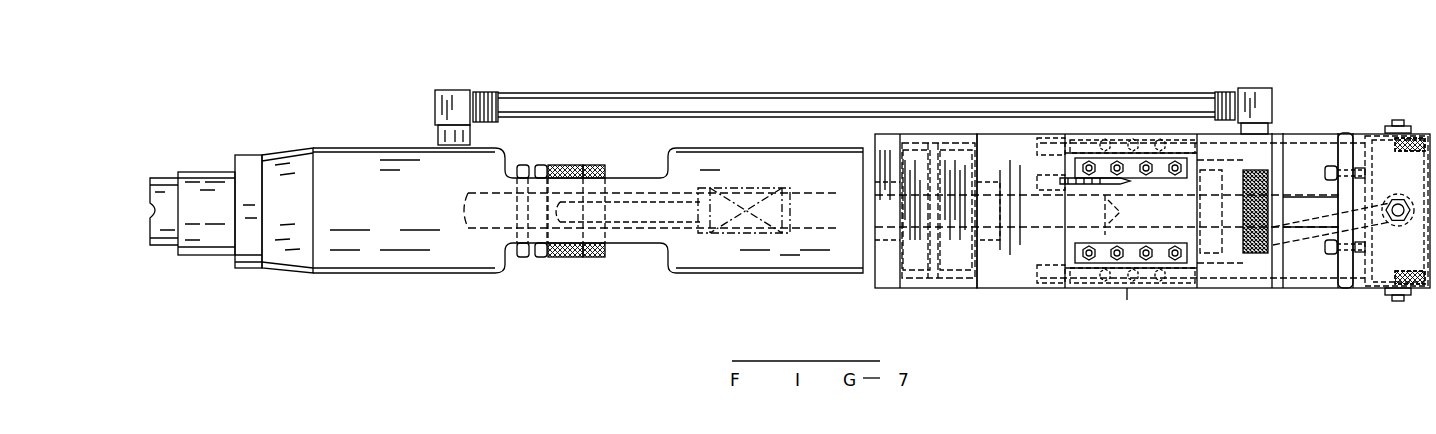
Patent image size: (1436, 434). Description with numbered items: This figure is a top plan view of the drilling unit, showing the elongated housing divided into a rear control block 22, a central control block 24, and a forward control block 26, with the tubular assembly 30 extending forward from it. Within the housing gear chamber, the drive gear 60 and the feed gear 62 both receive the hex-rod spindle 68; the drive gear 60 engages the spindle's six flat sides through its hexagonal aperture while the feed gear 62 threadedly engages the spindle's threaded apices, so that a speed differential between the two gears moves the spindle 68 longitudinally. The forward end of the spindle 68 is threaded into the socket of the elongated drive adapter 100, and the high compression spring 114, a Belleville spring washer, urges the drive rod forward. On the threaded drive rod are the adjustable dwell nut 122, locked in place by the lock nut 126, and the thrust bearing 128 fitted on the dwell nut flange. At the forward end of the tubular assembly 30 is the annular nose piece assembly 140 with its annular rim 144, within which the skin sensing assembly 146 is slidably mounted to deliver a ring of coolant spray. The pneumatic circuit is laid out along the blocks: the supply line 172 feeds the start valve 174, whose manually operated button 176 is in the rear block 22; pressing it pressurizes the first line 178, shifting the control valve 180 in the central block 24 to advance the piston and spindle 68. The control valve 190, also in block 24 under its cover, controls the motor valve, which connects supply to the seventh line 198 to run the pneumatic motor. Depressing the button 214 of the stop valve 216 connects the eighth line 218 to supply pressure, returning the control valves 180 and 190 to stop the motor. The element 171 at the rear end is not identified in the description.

The rear control block 22 is at (1426, 133).
The central control block 24 is at (1225, 290).
The forward control block 26 is at (1003, 290).
The tubular assembly 30 is at (468, 278).
The drive gear 60 is at (917, 147).
The feed gear 62 is at (953, 147).
The hex-rod spindle 68 is at (1012, 192).
The drive adapter 100 is at (805, 190).
The high compression spring 114 is at (757, 205).
The dwell nut 122 is at (562, 164).
The lock nut 126 is at (602, 164).
The thrust bearing 128 is at (535, 164).
The annular nose piece assembly 140 is at (284, 148).
The annular rim 144 is at (177, 175).
The skin sensing assembly 146 is at (210, 172).
The hex adjustment nut 171 is at (1412, 200).
The supply line 172 is at (1302, 242).
The start valve 174 is at (1422, 290).
The manually operated button 176 is at (1400, 301).
The first line 178 is at (1330, 255).
The control valve 180 is at (1158, 312).
The control valve 190 is at (1116, 140).
The seventh line 198 is at (805, 101).
The button 214 is at (1400, 120).
The stop valve 216 is at (1380, 133).
The eighth line 218 is at (1325, 172).